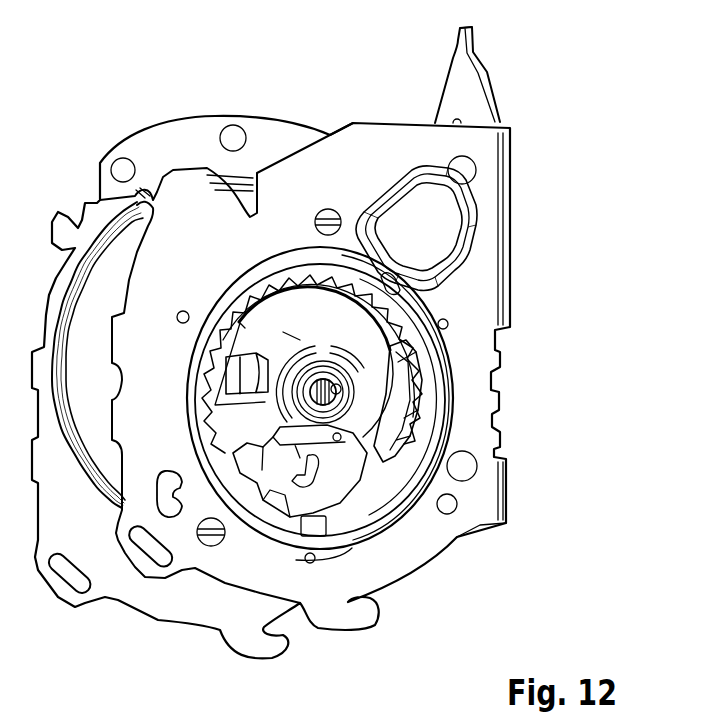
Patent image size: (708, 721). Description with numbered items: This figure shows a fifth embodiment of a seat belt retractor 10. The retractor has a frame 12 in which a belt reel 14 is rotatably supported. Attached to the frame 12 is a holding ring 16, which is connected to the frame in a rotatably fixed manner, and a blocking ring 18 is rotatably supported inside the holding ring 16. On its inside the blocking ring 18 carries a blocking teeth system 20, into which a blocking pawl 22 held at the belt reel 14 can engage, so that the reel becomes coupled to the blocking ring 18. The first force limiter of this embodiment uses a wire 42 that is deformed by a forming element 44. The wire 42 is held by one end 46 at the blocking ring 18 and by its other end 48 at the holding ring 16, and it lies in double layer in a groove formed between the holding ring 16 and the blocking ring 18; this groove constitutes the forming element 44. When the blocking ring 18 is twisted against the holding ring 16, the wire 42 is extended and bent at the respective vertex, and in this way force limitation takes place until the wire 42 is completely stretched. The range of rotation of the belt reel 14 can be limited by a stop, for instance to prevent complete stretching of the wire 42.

The seat belt retractor 10 is at (547, 93).
The frame 12 is at (486, 238).
The belt reel 14 is at (367, 414).
The holding ring 16 is at (242, 517).
The blocking ring 18 is at (387, 305).
The blocking teeth system 20 is at (383, 492).
The blocking pawl 22 is at (350, 468).
The wire 42 is at (453, 350).
The forming element 44 is at (450, 365).
The end 46 is at (300, 545).
The other end 48 is at (334, 548).